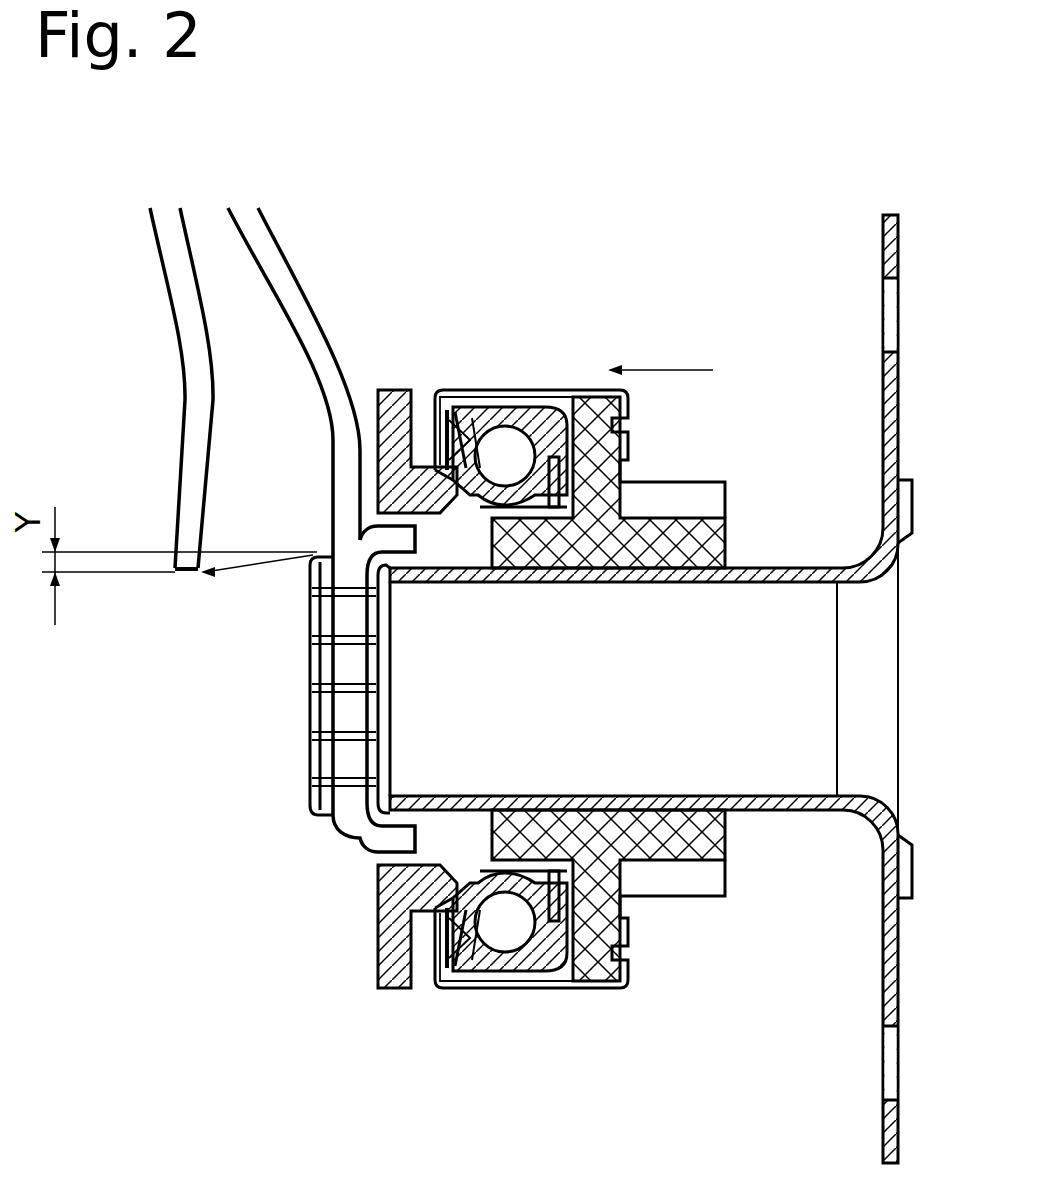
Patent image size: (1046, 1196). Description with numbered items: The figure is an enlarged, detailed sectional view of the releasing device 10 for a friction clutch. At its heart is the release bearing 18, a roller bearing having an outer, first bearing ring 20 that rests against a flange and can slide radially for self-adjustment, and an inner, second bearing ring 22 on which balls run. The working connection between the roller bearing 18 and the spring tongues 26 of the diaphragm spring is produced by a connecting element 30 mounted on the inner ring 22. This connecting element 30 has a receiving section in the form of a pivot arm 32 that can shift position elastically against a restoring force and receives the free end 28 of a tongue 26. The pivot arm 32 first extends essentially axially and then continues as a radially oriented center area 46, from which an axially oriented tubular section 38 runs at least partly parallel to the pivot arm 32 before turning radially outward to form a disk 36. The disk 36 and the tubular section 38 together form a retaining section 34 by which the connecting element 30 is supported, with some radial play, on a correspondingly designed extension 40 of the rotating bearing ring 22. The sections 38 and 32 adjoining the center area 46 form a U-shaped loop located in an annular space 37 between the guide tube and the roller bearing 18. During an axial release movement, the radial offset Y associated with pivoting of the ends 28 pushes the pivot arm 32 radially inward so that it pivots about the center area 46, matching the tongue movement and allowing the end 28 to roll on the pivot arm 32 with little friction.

The releasing device 10 is at (238, 1004).
The release bearing 18 is at (566, 345).
The first bearing ring 20 is at (495, 412).
The second bearing ring 22 is at (445, 912).
The spring tongues 26 is at (300, 302).
The free ends 28 is at (183, 575).
The connecting element 30 is at (343, 897).
The pivot arm 32 is at (333, 822).
The retaining section 34 is at (367, 893).
The disk 36 is at (373, 937).
The annular space 37 is at (460, 582).
The tubular section 38 is at (370, 868).
The extension 40 is at (423, 448).
The center area 46 is at (462, 850).